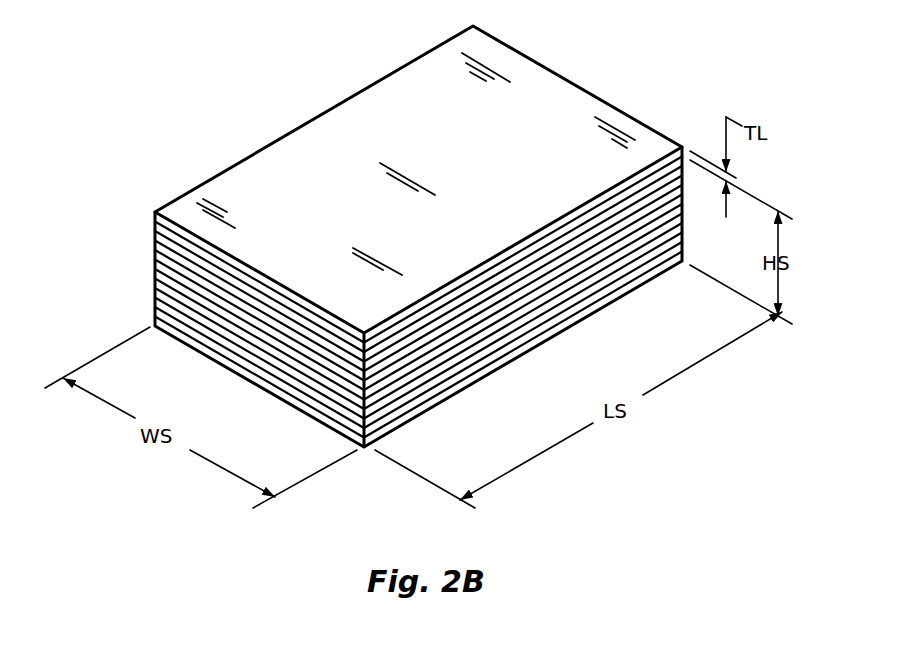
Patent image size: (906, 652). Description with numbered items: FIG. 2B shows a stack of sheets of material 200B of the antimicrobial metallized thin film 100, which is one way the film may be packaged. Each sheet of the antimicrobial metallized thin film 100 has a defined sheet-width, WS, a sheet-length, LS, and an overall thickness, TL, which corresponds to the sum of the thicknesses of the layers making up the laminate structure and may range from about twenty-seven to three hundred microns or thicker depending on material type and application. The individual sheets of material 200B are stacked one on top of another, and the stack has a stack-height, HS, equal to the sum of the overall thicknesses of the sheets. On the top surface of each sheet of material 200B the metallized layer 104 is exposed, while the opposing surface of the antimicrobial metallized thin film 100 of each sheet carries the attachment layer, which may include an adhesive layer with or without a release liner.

The sheets of material 200B is at (357, 232).
The metallized layer 104 is at (558, 95).
The antimicrobial metallized thin film 100 is at (153, 210).